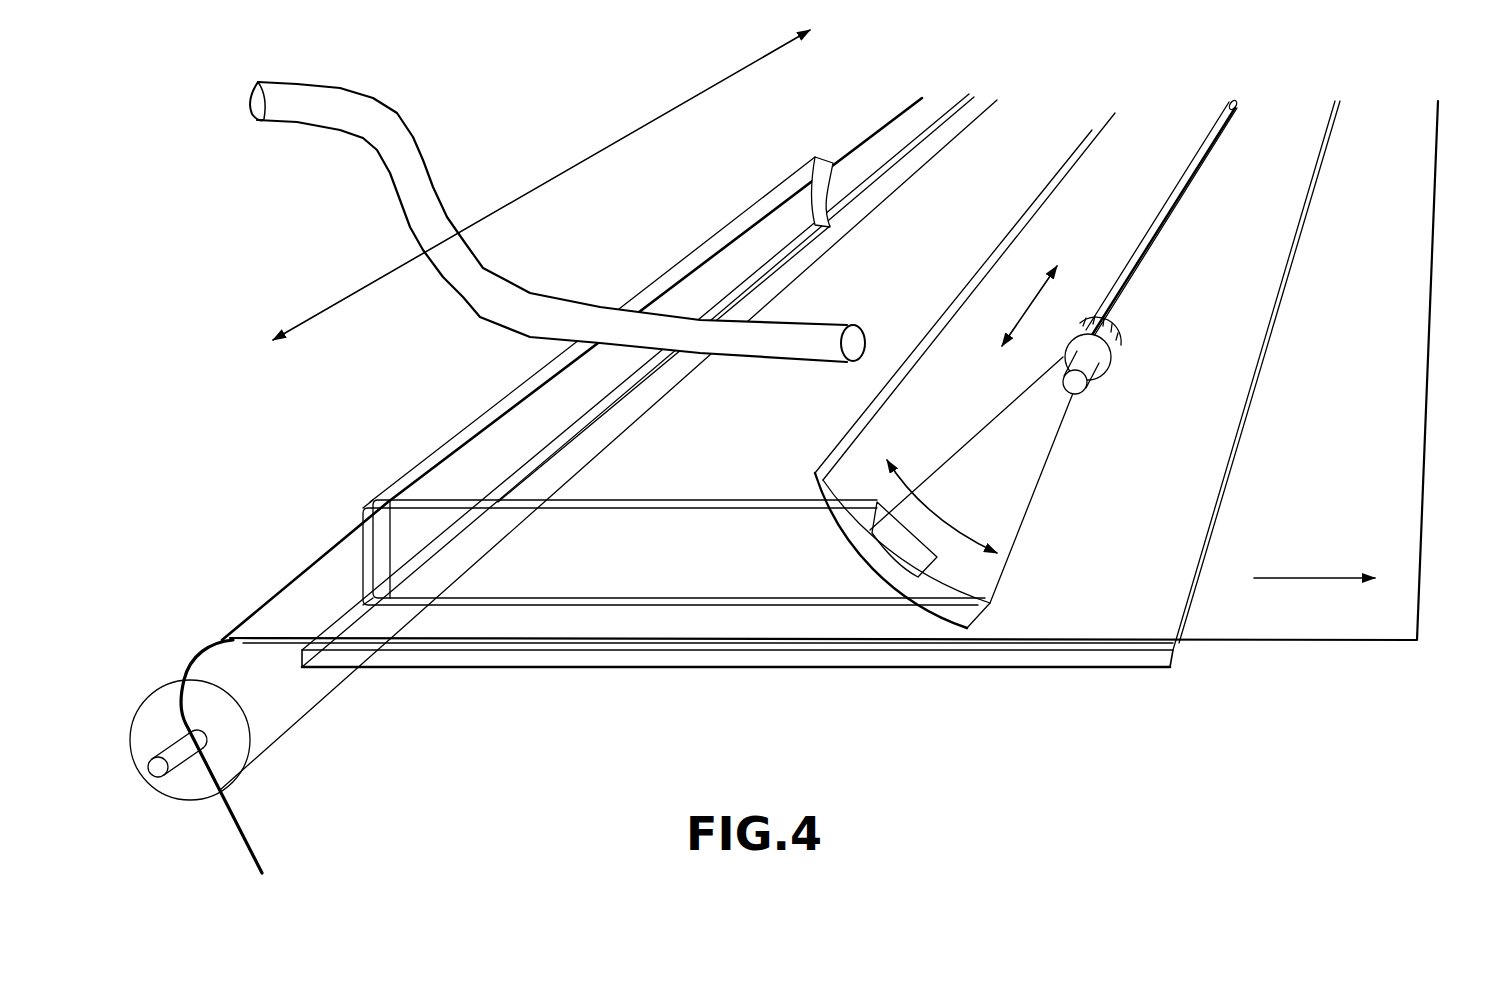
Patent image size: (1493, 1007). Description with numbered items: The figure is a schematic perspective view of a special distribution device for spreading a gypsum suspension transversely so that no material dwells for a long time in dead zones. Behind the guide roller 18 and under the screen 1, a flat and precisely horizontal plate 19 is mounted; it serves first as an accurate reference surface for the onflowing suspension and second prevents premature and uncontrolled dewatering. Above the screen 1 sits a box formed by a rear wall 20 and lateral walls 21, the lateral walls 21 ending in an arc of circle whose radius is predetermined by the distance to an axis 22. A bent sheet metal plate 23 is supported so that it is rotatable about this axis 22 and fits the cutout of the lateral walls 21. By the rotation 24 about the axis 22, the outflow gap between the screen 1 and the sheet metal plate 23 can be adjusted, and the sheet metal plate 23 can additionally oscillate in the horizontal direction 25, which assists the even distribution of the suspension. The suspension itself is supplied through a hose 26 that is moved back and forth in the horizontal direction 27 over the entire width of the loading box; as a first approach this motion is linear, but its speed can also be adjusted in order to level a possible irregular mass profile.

The screen 1 is at (1429, 393).
The guide roller 18 is at (277, 717).
The plate 19 is at (970, 658).
The rear wall 20 is at (413, 475).
The lateral walls 21 is at (708, 507).
The axis 22 is at (1200, 157).
The bent sheet metal plate 23 is at (1030, 490).
The rotation 24 is at (933, 510).
The horizontal direction 25 is at (1033, 293).
The hose 26 is at (383, 135).
The horizontal direction 27 is at (598, 153).